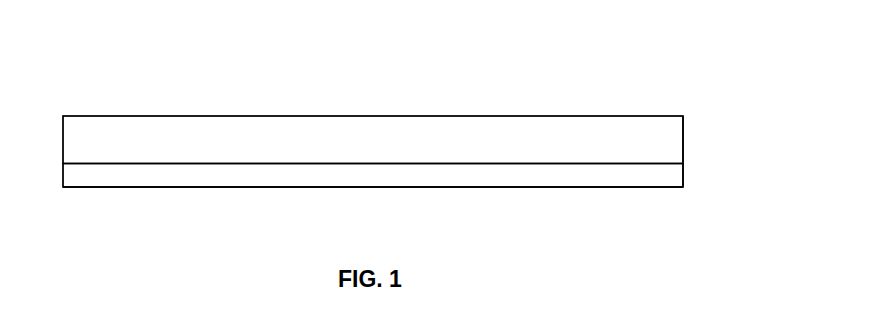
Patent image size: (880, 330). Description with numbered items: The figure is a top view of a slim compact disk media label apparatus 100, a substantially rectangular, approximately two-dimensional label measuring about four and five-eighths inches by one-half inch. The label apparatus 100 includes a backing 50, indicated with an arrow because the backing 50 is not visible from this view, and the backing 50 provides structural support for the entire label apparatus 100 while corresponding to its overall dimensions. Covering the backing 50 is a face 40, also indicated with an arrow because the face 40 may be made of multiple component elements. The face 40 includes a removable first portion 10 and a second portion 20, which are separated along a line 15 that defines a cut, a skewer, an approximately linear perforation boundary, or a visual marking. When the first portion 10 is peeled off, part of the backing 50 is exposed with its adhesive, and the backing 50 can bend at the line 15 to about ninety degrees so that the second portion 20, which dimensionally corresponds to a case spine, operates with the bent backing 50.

The slim compact disk media label apparatus 100 is at (103, 72).
The first portion 10 is at (477, 140).
The line 15 is at (642, 163).
The second portion 20 is at (510, 175).
The face 40 is at (83, 197).
The backing 50 is at (656, 90).